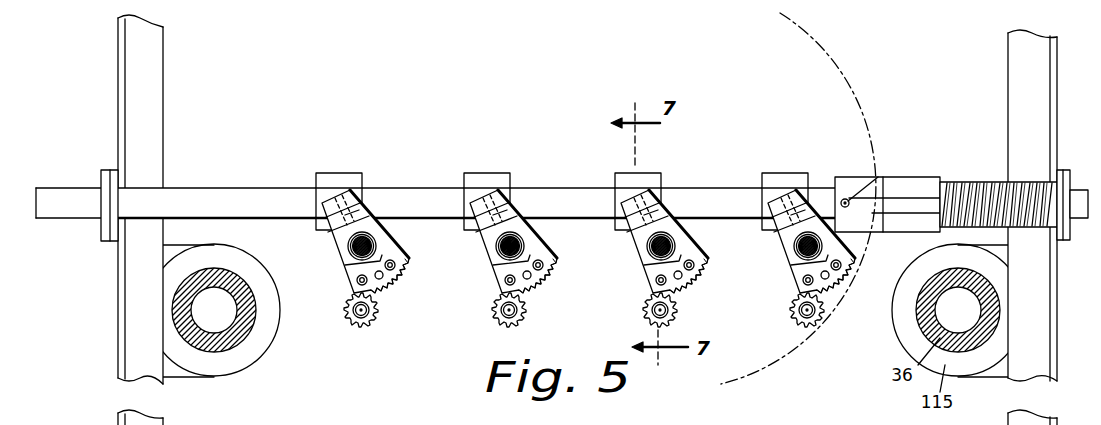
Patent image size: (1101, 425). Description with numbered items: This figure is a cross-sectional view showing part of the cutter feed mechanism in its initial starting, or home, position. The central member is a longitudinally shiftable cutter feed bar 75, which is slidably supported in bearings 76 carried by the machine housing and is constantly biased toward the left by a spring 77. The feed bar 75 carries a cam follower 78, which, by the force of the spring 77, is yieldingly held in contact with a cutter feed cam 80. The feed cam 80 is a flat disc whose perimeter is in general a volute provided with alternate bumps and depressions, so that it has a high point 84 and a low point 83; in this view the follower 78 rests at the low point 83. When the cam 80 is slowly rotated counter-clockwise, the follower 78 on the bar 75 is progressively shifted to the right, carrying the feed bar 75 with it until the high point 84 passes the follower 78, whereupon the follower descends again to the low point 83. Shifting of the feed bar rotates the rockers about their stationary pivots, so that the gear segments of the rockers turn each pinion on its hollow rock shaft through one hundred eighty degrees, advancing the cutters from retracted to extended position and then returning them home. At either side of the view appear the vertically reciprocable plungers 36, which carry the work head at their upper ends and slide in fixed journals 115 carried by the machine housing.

The plungers 36 is at (237, 333).
The fixed journal 115 is at (232, 362).
The cutter feed bar 75 is at (713, 198).
The low point 83 is at (832, 196).
The high point 84 is at (880, 172).
The cam follower 78 is at (849, 207).
The cutter feed cam 80 is at (878, 147).
The spring 77 is at (977, 186).
The bearings 76 is at (1066, 241).